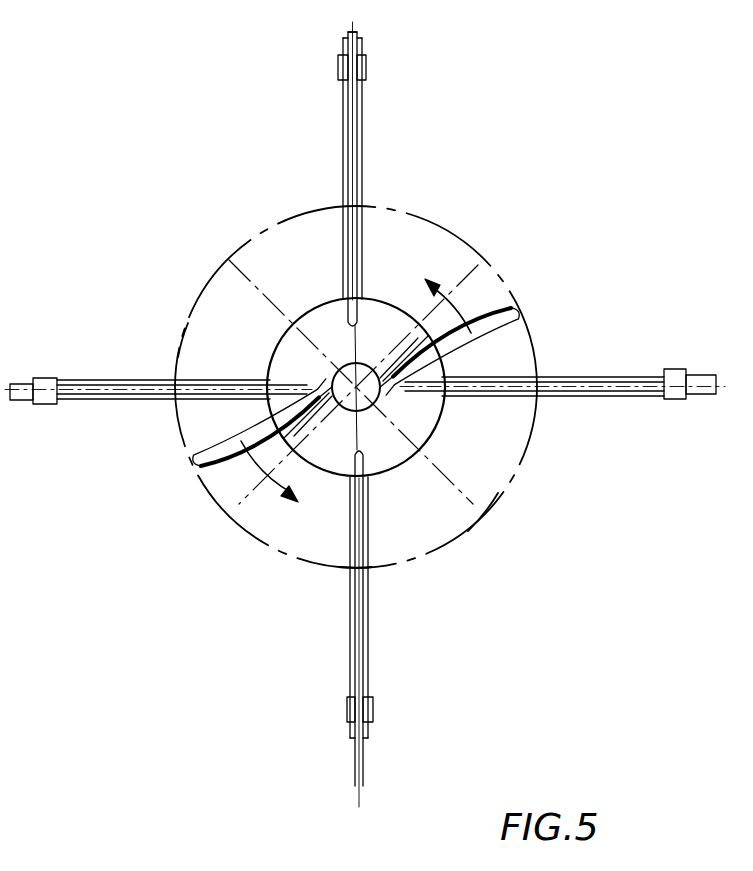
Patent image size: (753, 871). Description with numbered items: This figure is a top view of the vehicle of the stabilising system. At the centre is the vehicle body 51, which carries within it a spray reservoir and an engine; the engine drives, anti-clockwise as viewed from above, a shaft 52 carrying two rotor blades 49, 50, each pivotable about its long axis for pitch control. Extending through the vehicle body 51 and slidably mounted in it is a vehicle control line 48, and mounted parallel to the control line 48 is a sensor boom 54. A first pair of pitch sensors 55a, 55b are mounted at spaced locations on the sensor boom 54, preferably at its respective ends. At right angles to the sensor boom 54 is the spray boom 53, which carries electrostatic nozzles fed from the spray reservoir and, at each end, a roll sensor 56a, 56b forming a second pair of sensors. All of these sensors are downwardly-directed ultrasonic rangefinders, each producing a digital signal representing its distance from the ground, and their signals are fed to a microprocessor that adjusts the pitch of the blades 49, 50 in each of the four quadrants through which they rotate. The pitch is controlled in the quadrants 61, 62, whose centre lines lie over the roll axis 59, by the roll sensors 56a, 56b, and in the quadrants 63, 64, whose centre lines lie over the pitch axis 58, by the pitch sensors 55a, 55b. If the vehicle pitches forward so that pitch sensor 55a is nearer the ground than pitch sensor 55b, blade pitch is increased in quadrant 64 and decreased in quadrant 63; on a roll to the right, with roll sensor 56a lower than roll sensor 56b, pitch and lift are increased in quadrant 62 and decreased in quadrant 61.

The vehicle control line 48 is at (346, 30).
The rotor blade 49 is at (192, 462).
The rotor blade 50 is at (512, 313).
The vehicle body 51 is at (334, 307).
The shaft 52 is at (332, 384).
The spray boom 53 is at (570, 377).
The sensor boom 54 is at (364, 125).
The pitch sensor 55a is at (368, 66).
The pitch sensor 55b is at (347, 710).
The roll sensor 56a is at (677, 399).
The roll sensor 56b is at (48, 378).
The pitch axis 58 is at (152, 400).
The roll axis 59 is at (352, 630).
The quadrant 61 is at (415, 240).
The quadrant 62 is at (393, 547).
The quadrant 63 is at (200, 322).
The quadrant 64 is at (480, 476).